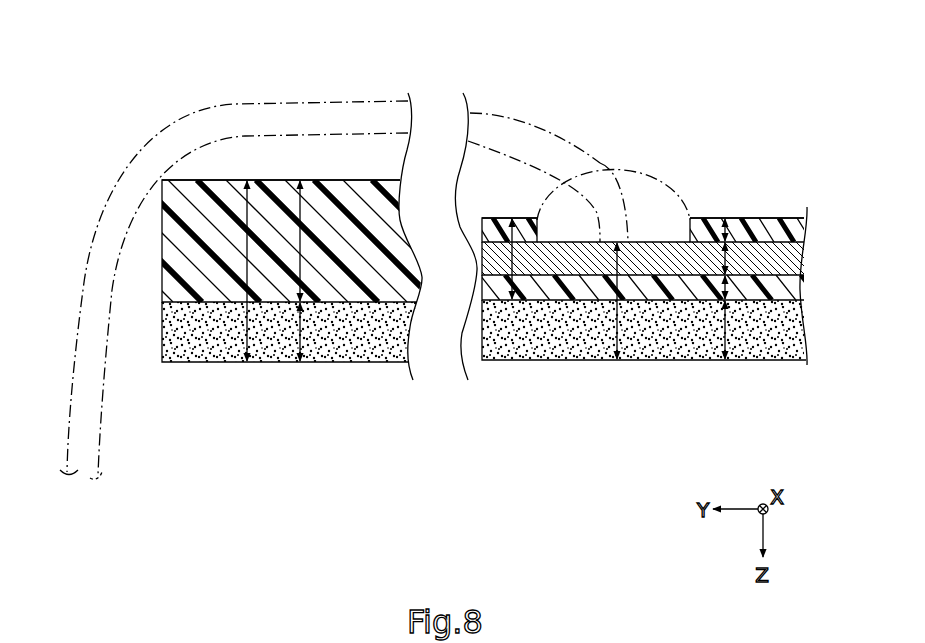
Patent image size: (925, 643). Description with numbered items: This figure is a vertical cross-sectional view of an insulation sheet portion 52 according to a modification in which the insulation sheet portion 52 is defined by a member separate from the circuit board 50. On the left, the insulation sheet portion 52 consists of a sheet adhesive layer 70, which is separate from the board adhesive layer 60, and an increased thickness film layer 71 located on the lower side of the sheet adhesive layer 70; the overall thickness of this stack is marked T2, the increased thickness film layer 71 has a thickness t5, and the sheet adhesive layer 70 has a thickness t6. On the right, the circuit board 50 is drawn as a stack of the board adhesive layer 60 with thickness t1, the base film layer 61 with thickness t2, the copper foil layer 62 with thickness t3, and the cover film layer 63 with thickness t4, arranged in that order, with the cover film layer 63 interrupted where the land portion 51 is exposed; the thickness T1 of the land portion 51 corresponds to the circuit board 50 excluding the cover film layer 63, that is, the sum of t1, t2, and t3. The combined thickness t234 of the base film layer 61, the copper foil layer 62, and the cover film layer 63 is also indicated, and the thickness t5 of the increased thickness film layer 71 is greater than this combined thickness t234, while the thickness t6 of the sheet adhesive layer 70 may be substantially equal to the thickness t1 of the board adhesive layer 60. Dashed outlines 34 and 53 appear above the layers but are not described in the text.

The film 34 is at (346, 101).
The insulation sheet portion 52 is at (272, 171).
The increased thickness film layer 71 is at (172, 226).
The sheet adhesive layer 70 is at (164, 338).
The protrusion 53 is at (624, 163).
The land portion 51 is at (642, 234).
The circuit board 50 is at (762, 217).
The cover film layer 63 is at (800, 222).
The copper foil layer 62 is at (795, 253).
The base film layer 61 is at (790, 289).
The board adhesive layer 60 is at (790, 332).
The thickness of increased thickness film layer t5 is at (302, 213).
The thickness of sheet adhesive layer t6 is at (306, 336).
The thickness of insulation sheet portion T2 is at (246, 318).
The combined thickness of base film, copper foil, and cover film layers t234 is at (517, 263).
The thickness of land portion T1 is at (618, 313).
The thickness of board adhesive layer t1 is at (728, 335).
The thickness of base film layer t2 is at (733, 285).
The thickness of copper foil layer t3 is at (728, 258).
The thickness of cover film layer t4 is at (722, 220).